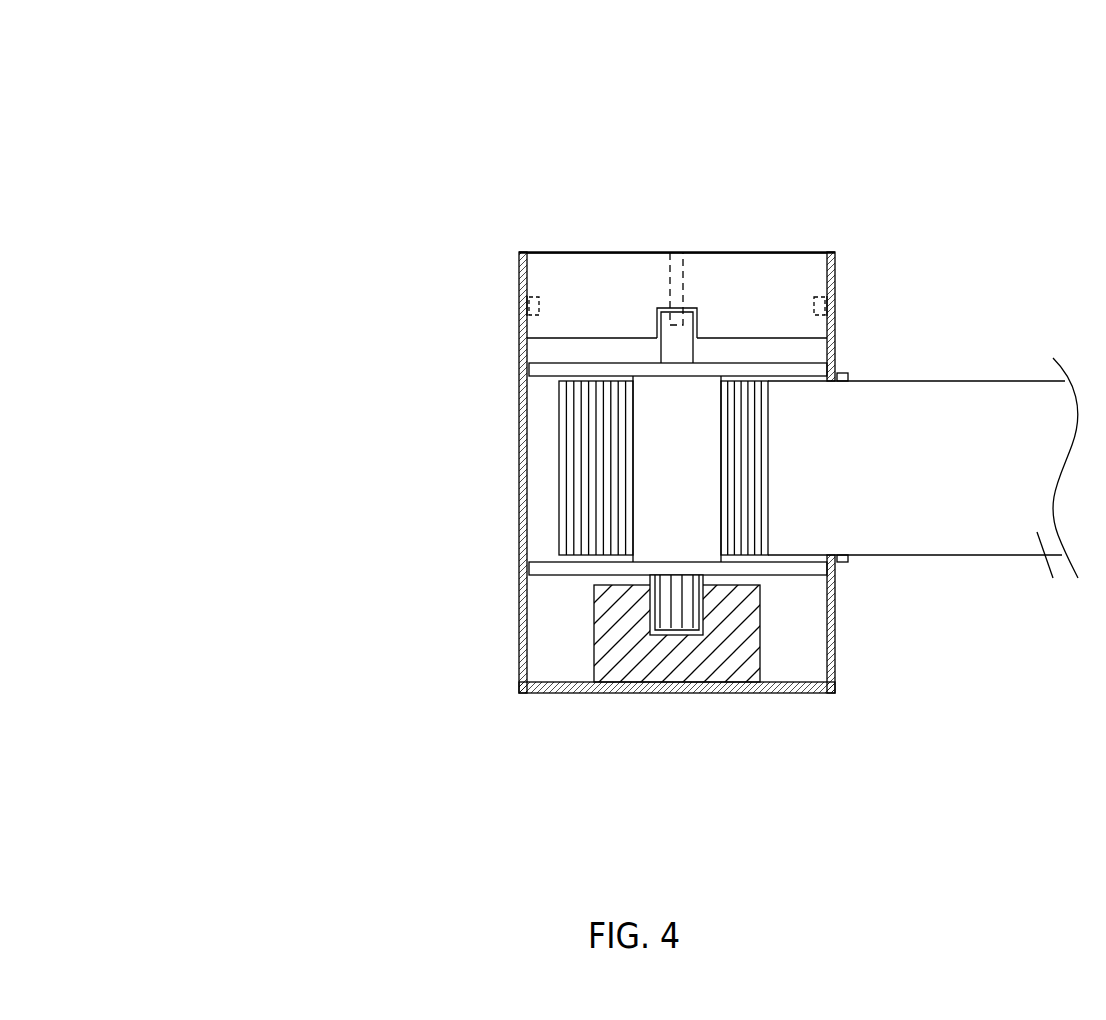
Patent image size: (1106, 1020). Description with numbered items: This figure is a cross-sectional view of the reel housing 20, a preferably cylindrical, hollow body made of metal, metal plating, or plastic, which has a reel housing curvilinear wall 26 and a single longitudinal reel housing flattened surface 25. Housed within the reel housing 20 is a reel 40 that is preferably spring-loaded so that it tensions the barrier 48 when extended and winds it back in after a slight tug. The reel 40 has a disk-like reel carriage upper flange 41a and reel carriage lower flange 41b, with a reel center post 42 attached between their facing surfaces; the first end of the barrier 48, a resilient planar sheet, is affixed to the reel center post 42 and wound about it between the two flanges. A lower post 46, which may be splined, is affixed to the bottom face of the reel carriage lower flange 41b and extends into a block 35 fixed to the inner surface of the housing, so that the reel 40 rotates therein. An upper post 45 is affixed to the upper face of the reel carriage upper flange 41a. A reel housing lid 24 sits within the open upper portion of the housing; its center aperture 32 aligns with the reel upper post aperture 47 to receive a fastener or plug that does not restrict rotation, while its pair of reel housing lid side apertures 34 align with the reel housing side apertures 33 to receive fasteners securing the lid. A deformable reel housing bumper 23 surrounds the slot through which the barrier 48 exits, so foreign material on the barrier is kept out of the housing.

The reel housing 20 is at (257, 192).
The reel housing bumper 23 is at (845, 372).
The reel housing lid 24 is at (563, 273).
The reel housing flattened surface 25 is at (835, 682).
The reel housing curvilinear wall 26 is at (520, 562).
The center aperture 32 is at (677, 275).
The reel housing side apertures 33 is at (518, 307).
The reel housing lid side apertures 34 is at (532, 298).
The block 35 is at (603, 677).
The reel 40 is at (587, 462).
The reel carriage upper flange 41a is at (528, 372).
The reel carriage lower flange 41b is at (528, 568).
The reel center post 42 is at (668, 500).
The upper post 45 is at (697, 337).
The lower post 46 is at (673, 612).
The reel upper post aperture 47 is at (663, 318).
The barrier 48 is at (923, 485).